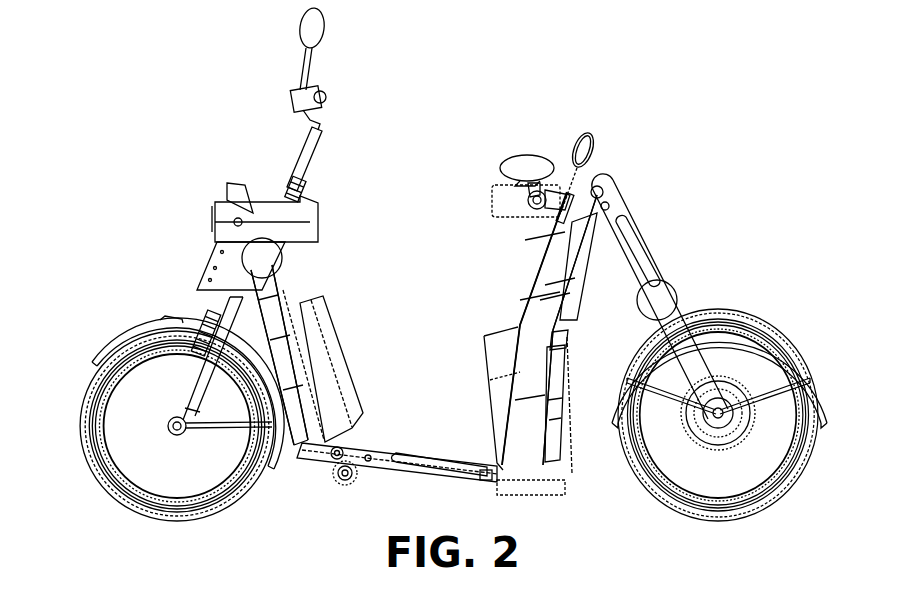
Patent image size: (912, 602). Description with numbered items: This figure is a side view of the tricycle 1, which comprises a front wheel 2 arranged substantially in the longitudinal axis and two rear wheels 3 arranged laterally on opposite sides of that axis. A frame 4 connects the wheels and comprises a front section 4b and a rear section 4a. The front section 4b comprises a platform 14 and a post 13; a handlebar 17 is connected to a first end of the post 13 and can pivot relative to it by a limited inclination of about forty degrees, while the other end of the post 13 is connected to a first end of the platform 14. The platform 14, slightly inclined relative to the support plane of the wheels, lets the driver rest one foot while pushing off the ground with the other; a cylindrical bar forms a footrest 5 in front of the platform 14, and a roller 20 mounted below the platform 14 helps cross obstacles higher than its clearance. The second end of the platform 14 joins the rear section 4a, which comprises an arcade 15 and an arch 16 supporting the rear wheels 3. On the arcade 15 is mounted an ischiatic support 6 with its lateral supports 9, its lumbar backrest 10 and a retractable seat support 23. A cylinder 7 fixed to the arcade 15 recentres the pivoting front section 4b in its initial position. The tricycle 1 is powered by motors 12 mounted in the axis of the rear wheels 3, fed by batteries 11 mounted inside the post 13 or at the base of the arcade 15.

The tricycle 1 is at (683, 100).
The front wheel 2 is at (105, 372).
The rear wheels 3 is at (748, 512).
The frame 4 is at (457, 290).
The rear section 4a is at (517, 322).
The front section 4b is at (385, 457).
The footrest 5 is at (335, 457).
The ischiatic support 6 is at (530, 200).
The cylinder 7 is at (553, 442).
The lateral supports 9 is at (517, 167).
The lumbar backrest 10 is at (583, 153).
The batteries 11 is at (497, 388).
The motors 12 is at (742, 385).
The post 13 is at (283, 343).
The platform 14 is at (402, 455).
The arcade 15 is at (545, 267).
The arch 16 is at (647, 260).
The handlebar 17 is at (307, 155).
The roller 20 is at (343, 478).
The retractable seat support 23 is at (492, 203).